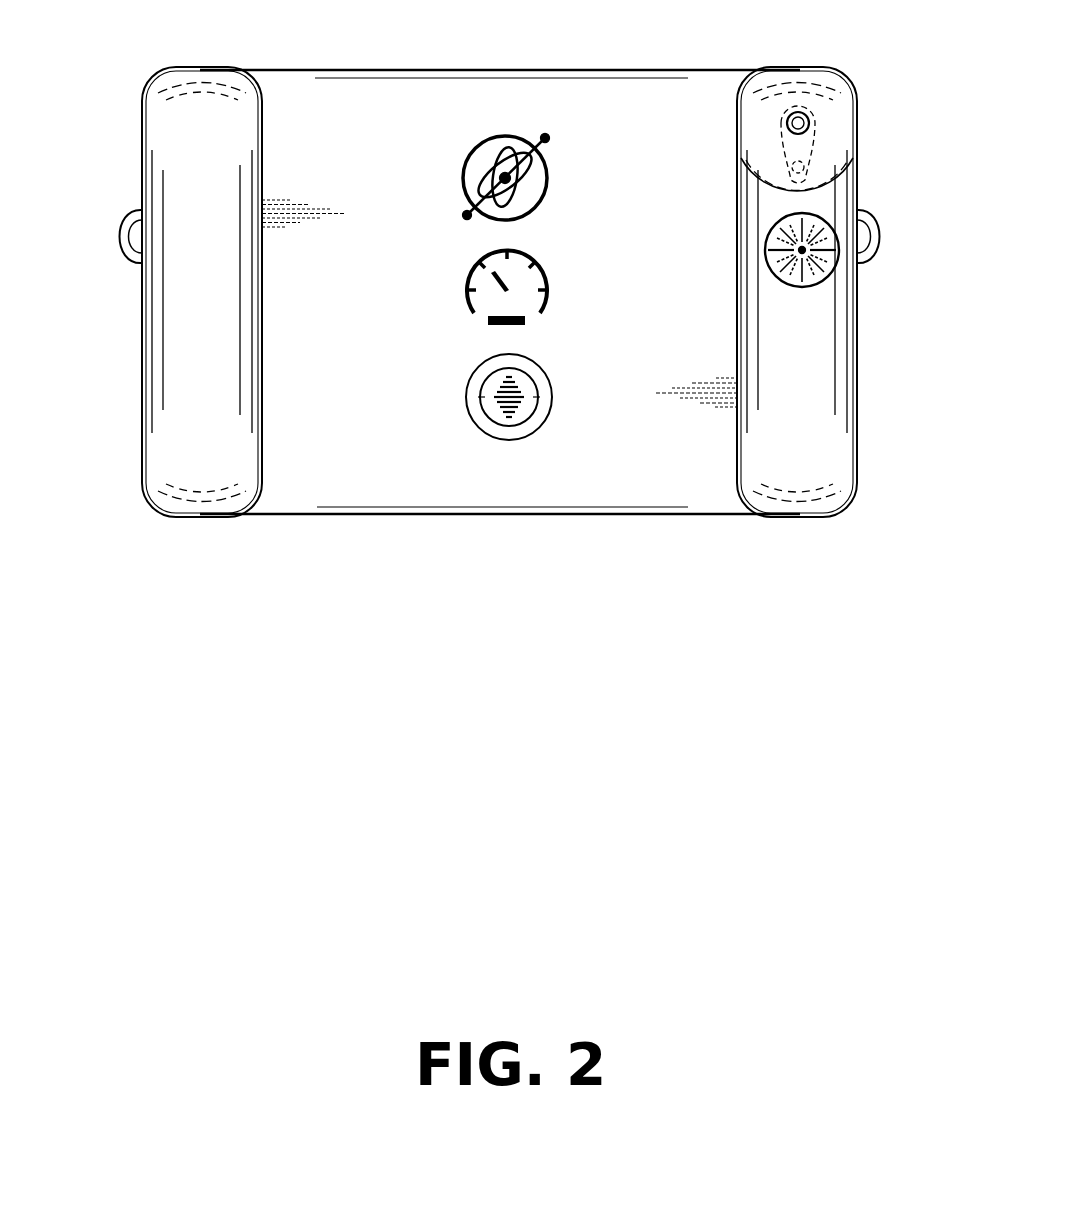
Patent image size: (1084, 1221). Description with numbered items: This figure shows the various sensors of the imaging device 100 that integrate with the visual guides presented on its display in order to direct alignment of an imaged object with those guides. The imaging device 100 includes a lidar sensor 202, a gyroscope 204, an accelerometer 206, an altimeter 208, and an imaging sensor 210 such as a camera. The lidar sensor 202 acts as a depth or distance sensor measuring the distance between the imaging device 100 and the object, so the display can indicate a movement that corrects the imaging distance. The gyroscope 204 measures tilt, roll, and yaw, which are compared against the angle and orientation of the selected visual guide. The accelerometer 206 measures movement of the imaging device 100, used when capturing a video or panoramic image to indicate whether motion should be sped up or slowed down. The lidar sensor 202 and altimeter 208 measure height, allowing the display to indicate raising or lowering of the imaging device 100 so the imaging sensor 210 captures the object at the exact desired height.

The imaging device 100 is at (136, 58).
The lidar sensor 202 is at (832, 230).
The gyroscope 204 is at (483, 138).
The accelerometer 206 is at (467, 291).
The altimeter 208 is at (468, 399).
The imaging sensor 210 is at (808, 118).